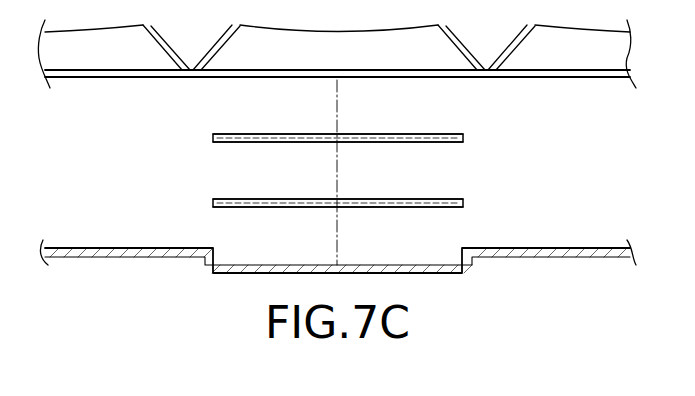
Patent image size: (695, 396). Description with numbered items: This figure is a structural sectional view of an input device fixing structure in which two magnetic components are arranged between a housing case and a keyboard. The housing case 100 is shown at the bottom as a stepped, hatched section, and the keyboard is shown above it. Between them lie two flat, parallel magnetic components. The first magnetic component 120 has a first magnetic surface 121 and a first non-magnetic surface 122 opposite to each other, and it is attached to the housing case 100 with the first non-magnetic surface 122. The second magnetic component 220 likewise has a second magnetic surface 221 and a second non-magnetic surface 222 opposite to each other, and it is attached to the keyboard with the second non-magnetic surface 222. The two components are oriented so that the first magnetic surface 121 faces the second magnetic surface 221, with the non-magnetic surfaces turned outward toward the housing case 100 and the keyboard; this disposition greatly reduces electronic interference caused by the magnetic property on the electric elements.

The housing case 100 is at (565, 257).
The first magnetic component 120 is at (465, 202).
The first magnetic surface 121 is at (228, 199).
The first non-magnetic surface 122 is at (228, 207).
The second magnetic component 220 is at (465, 136).
The second magnetic surface 221 is at (228, 142).
The second non-magnetic surface 222 is at (228, 134).